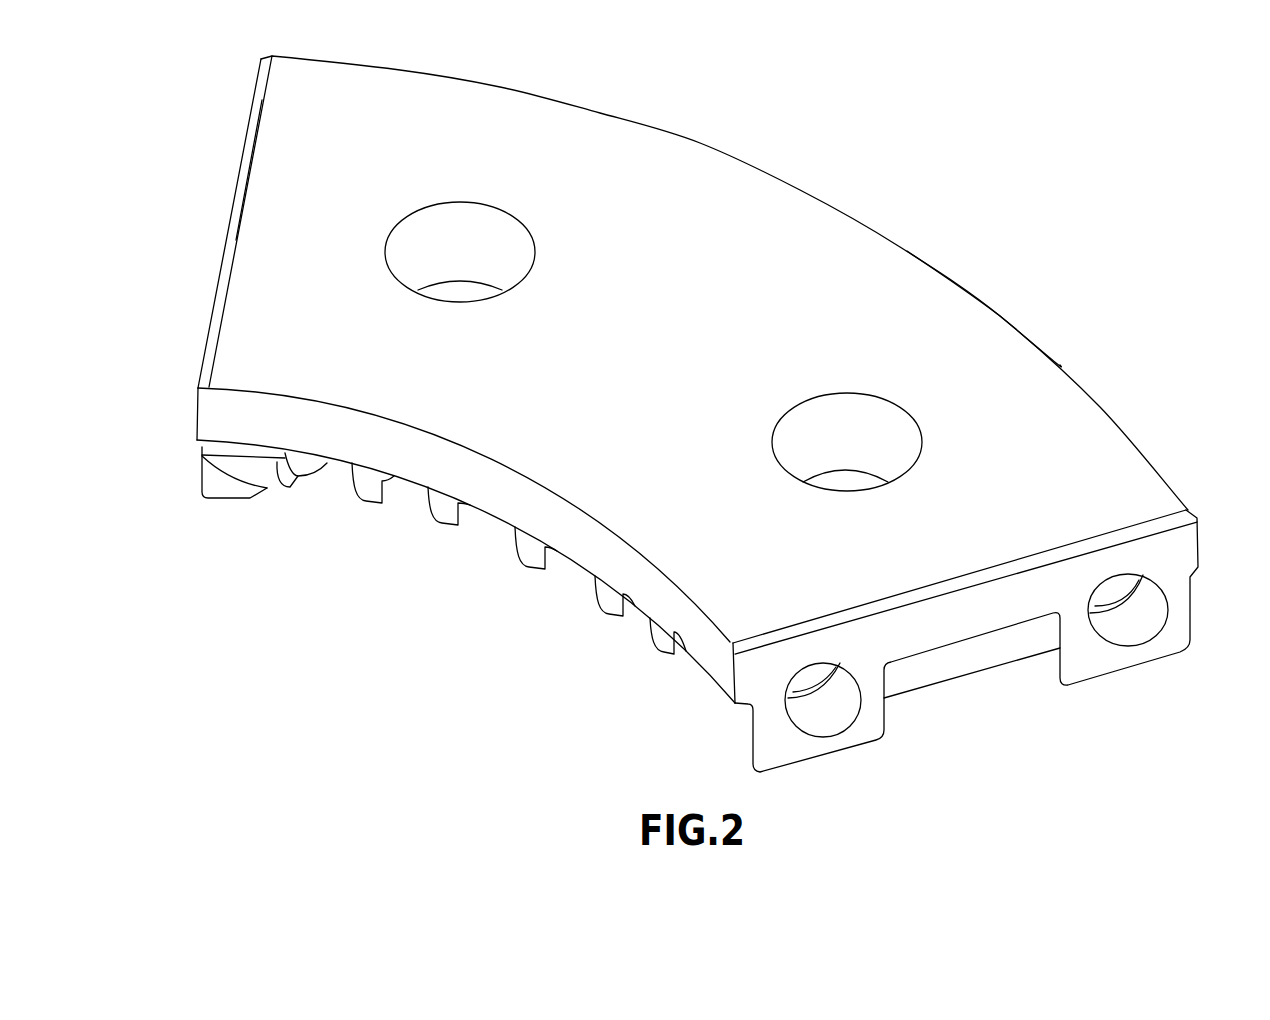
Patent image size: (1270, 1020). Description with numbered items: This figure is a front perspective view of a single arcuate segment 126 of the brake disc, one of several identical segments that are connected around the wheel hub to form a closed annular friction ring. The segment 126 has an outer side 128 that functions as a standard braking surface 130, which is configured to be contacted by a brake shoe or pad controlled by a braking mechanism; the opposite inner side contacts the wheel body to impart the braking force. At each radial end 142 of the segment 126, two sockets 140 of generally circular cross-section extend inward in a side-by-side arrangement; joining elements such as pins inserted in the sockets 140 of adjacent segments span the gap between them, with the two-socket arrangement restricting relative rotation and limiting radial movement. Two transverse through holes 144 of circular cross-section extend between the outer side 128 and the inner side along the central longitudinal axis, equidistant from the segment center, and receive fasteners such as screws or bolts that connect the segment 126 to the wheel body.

The segment 126 is at (883, 194).
The outer side 128 is at (973, 348).
The braking surface 130 is at (656, 339).
The socket 140 is at (830, 713).
The radial end 142 is at (233, 207).
The transverse through hole 144 is at (458, 232).